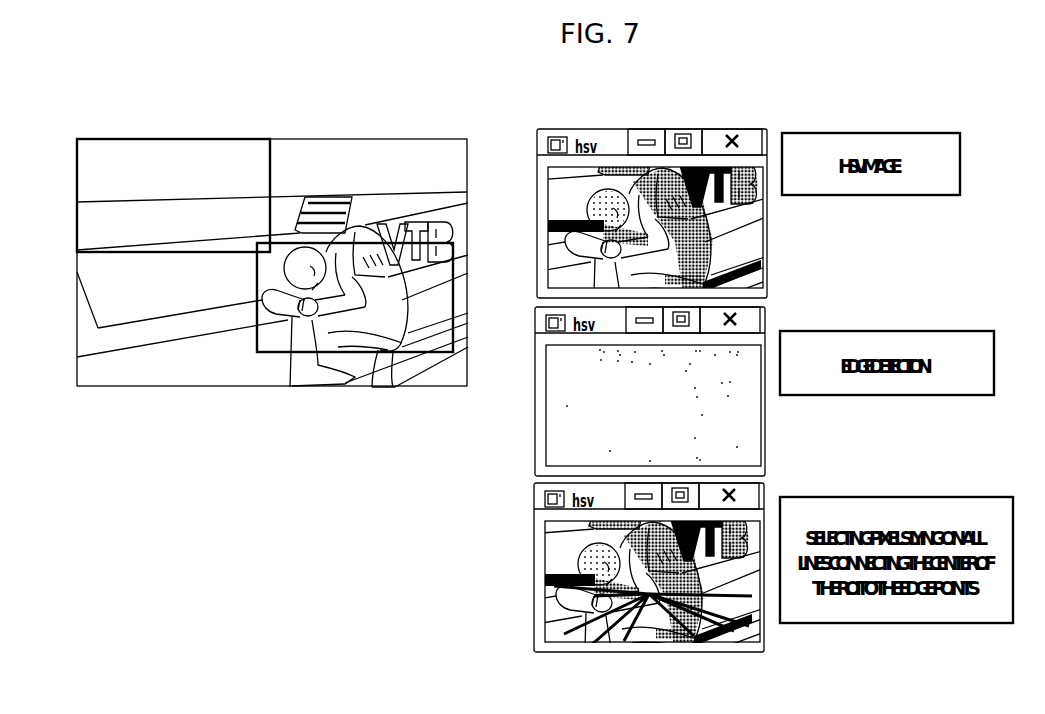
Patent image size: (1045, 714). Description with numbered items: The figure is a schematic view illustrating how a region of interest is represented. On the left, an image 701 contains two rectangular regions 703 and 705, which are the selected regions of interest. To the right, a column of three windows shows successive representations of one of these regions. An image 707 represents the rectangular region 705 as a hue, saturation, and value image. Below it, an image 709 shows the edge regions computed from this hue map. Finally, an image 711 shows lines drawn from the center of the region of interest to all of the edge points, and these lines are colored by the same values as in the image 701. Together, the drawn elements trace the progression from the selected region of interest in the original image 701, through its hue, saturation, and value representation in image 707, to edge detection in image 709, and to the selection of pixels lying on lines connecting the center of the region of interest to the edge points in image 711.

The image 701 is at (262, 387).
The rectangular region 703 is at (180, 160).
The rectangular region 705 is at (438, 302).
The image 707 is at (767, 242).
The image 709 is at (748, 427).
The image 711 is at (763, 640).